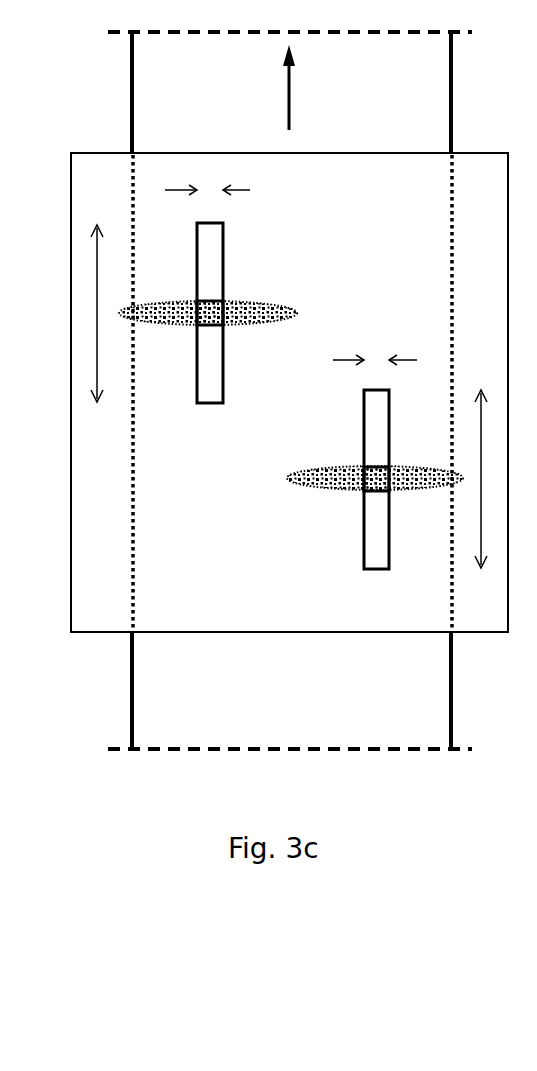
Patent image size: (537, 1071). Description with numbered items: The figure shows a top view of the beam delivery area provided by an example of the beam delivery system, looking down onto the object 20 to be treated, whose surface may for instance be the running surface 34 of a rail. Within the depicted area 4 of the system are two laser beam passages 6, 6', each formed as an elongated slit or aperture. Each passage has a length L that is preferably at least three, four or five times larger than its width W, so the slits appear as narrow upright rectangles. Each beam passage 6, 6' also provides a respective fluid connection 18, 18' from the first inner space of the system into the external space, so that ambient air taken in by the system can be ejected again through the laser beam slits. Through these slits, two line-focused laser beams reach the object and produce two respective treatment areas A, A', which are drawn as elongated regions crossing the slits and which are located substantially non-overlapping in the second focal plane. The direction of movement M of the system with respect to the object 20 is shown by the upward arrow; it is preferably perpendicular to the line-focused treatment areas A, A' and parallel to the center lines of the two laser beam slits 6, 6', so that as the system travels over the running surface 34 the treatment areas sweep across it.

The object to be treated 20 is at (290, 390).
The running surface 34 is at (404, 104).
The region 4 is at (308, 405).
The laser beam passage 6 is at (254, 311).
The fluid connection 18 is at (254, 311).
The laser beam passage 6' is at (318, 484).
The fluid connection 18' is at (318, 484).
The laser beam treatment area A is at (219, 301).
The laser beam treatment area A' is at (357, 489).
The direction of movement M is at (277, 87).
The length L is at (289, 383).
The width W is at (291, 275).